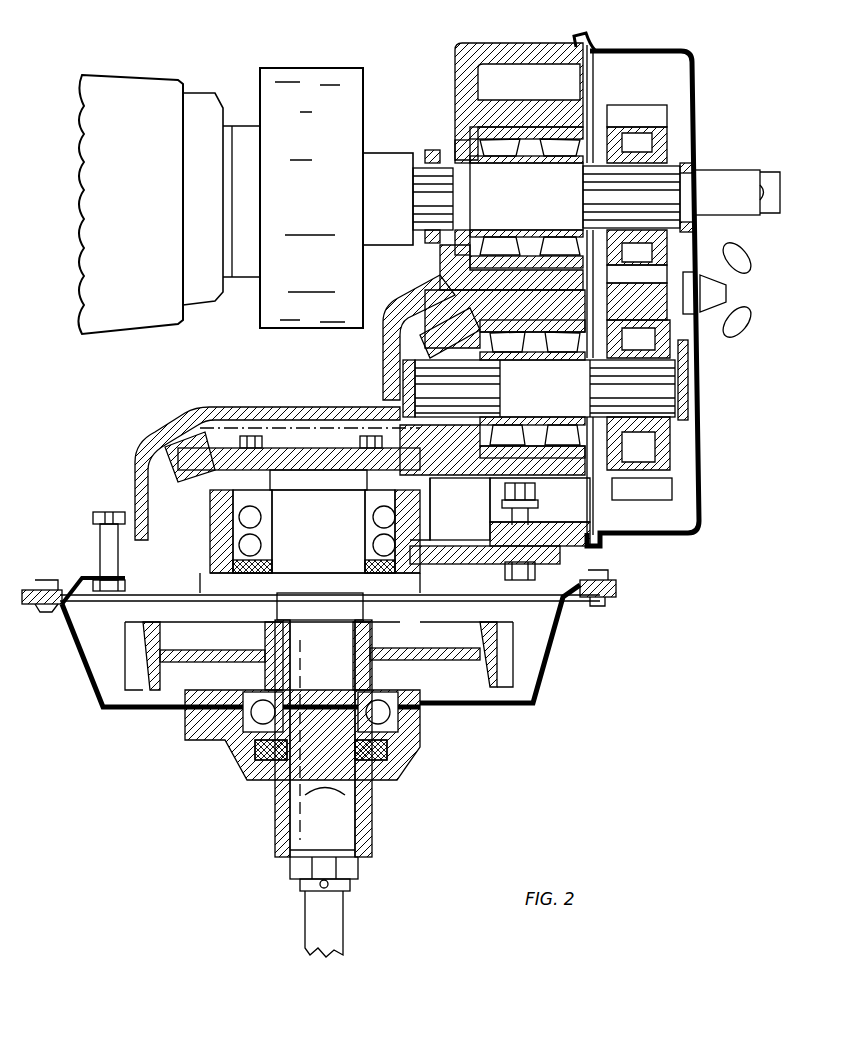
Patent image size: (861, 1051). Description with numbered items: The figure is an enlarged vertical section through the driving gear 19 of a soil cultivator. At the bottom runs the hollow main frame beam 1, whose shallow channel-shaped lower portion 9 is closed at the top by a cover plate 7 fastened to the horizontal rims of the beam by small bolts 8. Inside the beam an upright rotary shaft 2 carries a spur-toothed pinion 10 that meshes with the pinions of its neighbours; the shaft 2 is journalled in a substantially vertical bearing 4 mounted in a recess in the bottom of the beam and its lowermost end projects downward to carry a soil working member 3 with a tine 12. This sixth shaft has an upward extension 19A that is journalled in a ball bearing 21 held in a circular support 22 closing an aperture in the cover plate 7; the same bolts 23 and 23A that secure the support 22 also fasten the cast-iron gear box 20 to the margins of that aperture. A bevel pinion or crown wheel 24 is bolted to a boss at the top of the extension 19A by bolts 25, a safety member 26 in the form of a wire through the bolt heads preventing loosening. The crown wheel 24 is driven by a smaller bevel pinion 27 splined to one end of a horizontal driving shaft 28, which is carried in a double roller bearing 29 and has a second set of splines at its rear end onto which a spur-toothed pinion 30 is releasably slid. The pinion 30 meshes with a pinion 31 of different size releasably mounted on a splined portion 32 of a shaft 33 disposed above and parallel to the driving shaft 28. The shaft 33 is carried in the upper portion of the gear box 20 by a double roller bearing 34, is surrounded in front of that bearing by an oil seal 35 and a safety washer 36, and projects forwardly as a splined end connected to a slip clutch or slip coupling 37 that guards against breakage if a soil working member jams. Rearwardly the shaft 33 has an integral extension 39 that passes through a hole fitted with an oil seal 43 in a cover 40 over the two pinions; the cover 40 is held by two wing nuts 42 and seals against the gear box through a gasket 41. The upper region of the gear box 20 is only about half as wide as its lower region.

The hollow main frame beam 1 is at (84, 663).
The upright rotary shaft 2 is at (345, 818).
The soil working member 3 is at (372, 842).
The vertical bearing 4 is at (250, 752).
The cover plate 7 is at (80, 580).
The small bolts 8 is at (615, 585).
The lower portion of the beam 9 is at (553, 638).
The spur-toothed pinion 10 is at (505, 712).
The tine 12 is at (305, 915).
The driving gear 19 is at (504, 268).
The upward extension of the shaft 19A is at (300, 510).
The gear box 20 is at (520, 48).
The ball bearing 21 is at (410, 522).
The circular support 22 is at (210, 523).
The bolts 23 is at (114, 520).
The bolts 23A is at (515, 580).
The bevel pinion or crown wheel 24 is at (170, 440).
The bolts 25 is at (248, 438).
The safety member 26 is at (316, 430).
The smaller bevel pinion 27 is at (415, 320).
The driving shaft 28 is at (403, 375).
The double roller bearing 29 is at (572, 415).
The spur-toothed pinion 30 is at (665, 495).
The pinion 31 is at (660, 118).
The splined portion 32 is at (665, 192).
The shaft 33 is at (455, 262).
The double roller bearing 34 is at (540, 158).
The oil seal 35 is at (455, 150).
The safety washer 36 is at (425, 152).
The slip clutch or slip coupling 37 is at (278, 68).
The rearward extension 39 is at (768, 178).
The cover 40 is at (665, 45).
The gasket 41 is at (592, 58).
The wing nuts 42 is at (740, 330).
The oil seal 43 is at (690, 228).